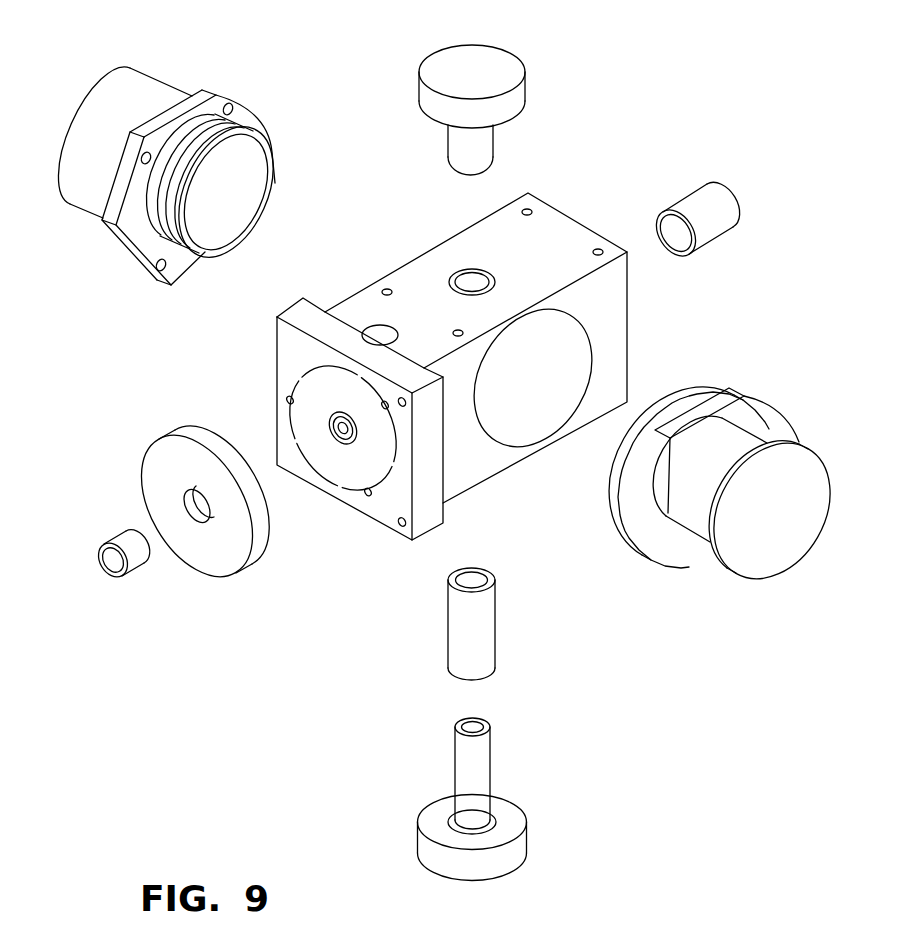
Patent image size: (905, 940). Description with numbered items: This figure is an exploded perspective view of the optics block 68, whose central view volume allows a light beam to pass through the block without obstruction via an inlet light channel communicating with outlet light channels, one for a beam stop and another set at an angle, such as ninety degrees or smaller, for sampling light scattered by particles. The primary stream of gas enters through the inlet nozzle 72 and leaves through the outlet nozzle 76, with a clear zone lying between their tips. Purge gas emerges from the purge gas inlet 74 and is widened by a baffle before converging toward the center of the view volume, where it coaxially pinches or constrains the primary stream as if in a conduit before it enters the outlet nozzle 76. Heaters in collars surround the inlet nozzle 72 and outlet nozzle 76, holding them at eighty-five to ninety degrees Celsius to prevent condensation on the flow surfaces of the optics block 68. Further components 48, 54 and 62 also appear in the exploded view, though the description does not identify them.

The bushing 48 is at (118, 540).
The sleeve 54 is at (726, 190).
The threaded coupling with flange 62 is at (73, 110).
The optics block 68 is at (569, 216).
The inlet nozzle 72 is at (527, 812).
The purge gas inlet 74 is at (497, 630).
The outlet nozzle 76 is at (438, 54).